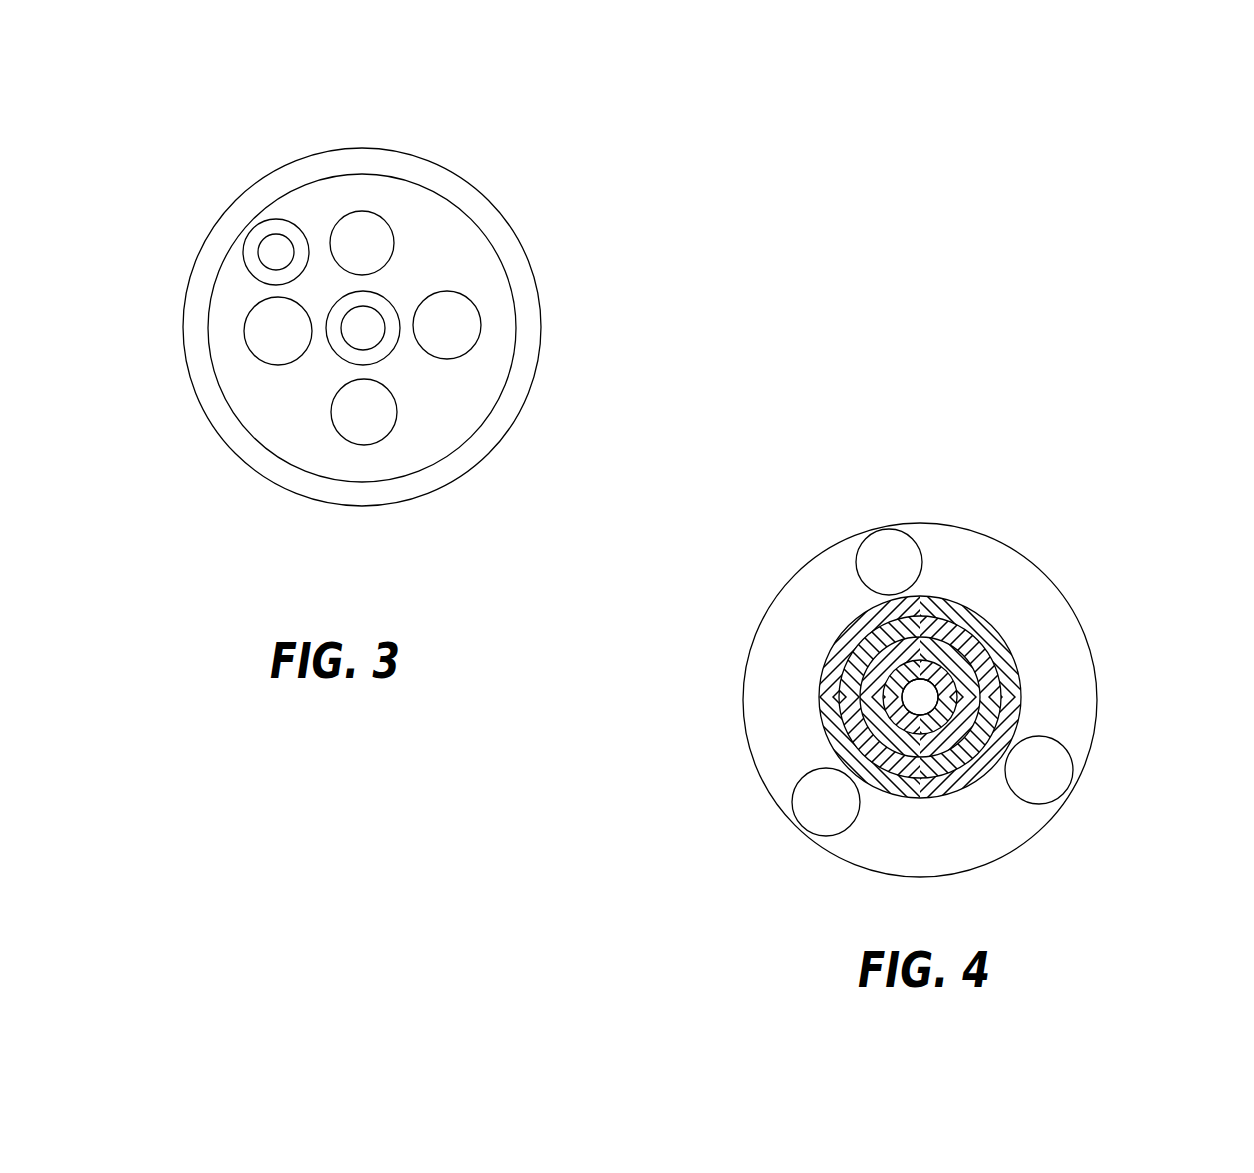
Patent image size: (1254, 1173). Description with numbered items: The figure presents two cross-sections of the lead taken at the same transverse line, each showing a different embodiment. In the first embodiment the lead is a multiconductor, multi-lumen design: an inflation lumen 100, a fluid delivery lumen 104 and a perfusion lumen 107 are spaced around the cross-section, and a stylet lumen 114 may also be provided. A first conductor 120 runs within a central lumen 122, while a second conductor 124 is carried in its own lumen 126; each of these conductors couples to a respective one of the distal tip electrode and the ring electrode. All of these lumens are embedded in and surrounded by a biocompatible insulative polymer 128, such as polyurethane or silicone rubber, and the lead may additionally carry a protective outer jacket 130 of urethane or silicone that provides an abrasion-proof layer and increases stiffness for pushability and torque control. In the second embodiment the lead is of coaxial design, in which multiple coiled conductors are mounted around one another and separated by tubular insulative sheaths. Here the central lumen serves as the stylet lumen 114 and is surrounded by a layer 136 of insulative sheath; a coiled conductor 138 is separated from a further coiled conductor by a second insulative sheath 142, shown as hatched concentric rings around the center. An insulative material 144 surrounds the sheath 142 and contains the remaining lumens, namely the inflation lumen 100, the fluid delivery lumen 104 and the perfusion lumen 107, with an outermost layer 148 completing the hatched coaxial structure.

In FIG. 3, the inflation lumen 100 is at (455, 313).
In FIG. 4, the inflation lumen 100 is at (888, 545).
In FIG. 3, the fluid delivery lumen 104 is at (389, 433).
In FIG. 4, the fluid delivery lumen 104 is at (1050, 780).
In FIG. 3, the perfusion lumen 107 is at (268, 339).
In FIG. 4, the perfusion lumen 107 is at (820, 807).
In FIG. 3, the stylet lumen 114 is at (361, 232).
In FIG. 4, the stylet lumen 114 is at (919, 697).
In FIG. 3, the first conductor 120 is at (366, 325).
In FIG. 3, the central lumen 122 is at (338, 355).
In FIG. 3, the second conductor 124 is at (275, 250).
In FIG. 3, the lumen 126 is at (270, 278).
In FIG. 3, the biocompatible insulative polymer 128 is at (460, 382).
In FIG. 3, the outer sheath 130 is at (491, 423).
In FIG. 4, the layer of insulative sheath 136 is at (1000, 645).
In FIG. 4, the coiled conductor 138 is at (1007, 672).
In FIG. 4, the second insulative sheath 142 is at (943, 763).
In FIG. 4, the insulative material 144 is at (775, 715).
In FIG. 4, the outer layer 148 is at (1012, 717).